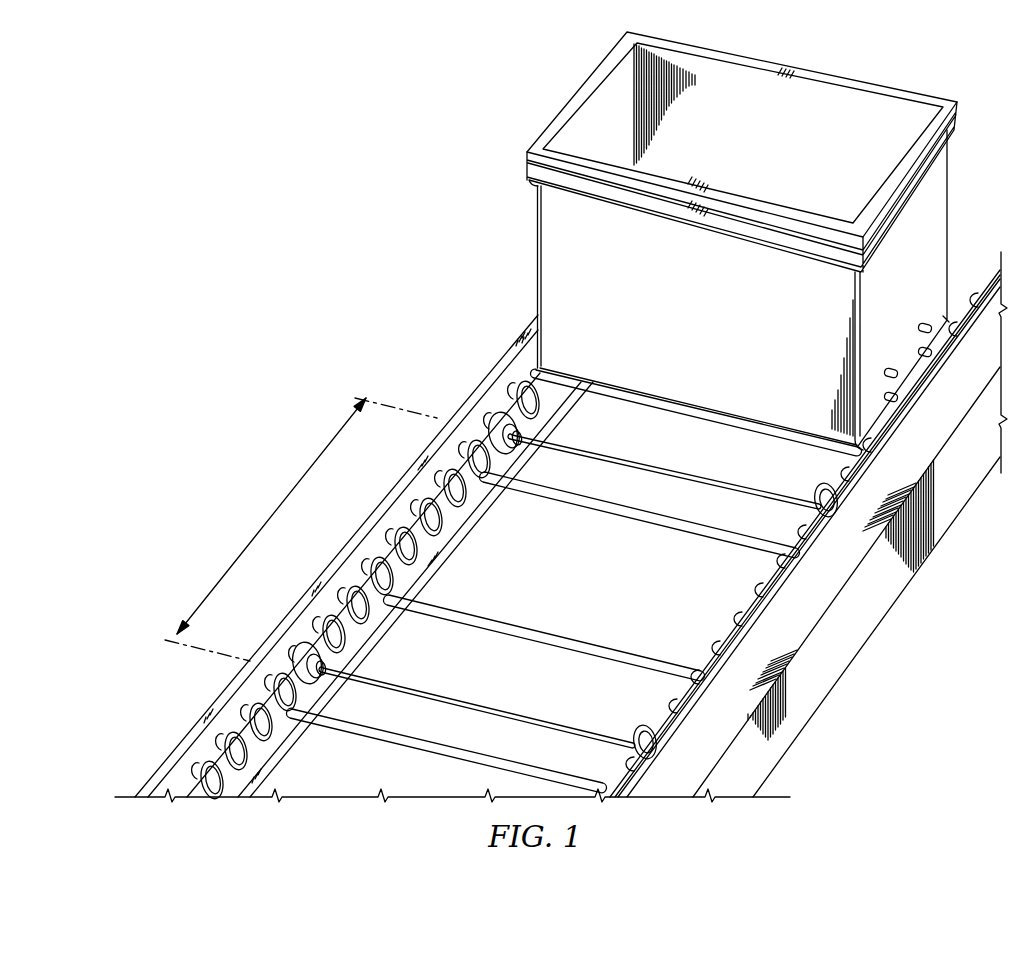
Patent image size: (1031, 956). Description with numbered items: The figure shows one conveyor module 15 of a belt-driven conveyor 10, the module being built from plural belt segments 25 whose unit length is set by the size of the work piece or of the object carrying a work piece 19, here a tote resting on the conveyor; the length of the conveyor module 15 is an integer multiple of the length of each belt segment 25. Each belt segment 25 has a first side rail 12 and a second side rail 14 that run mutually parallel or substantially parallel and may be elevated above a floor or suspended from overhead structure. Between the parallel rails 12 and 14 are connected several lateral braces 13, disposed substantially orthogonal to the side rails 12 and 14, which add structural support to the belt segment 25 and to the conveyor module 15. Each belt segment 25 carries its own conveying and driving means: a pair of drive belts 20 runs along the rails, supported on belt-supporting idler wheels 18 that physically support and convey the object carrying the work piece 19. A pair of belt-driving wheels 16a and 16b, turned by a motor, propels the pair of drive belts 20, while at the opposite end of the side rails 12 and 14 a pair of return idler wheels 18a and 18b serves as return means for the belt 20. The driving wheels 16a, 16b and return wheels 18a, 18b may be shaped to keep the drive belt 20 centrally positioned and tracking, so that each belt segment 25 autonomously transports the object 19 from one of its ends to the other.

The conveyor 10 is at (156, 255).
The first side rail 12 is at (857, 640).
The lateral brace 13 is at (619, 515).
The second side rail 14 is at (180, 737).
The conveyor module 15 is at (382, 394).
The belt-driving wheel 16a is at (640, 731).
The belt-driving wheel 16b is at (290, 655).
The idler wheel 18 is at (443, 522).
The return idler wheel 18a is at (800, 527).
The return idler wheel 18b is at (514, 456).
The object carrying a work piece 19 is at (572, 92).
The drive belt 20 is at (585, 547).
The belt segment 25 is at (269, 519).